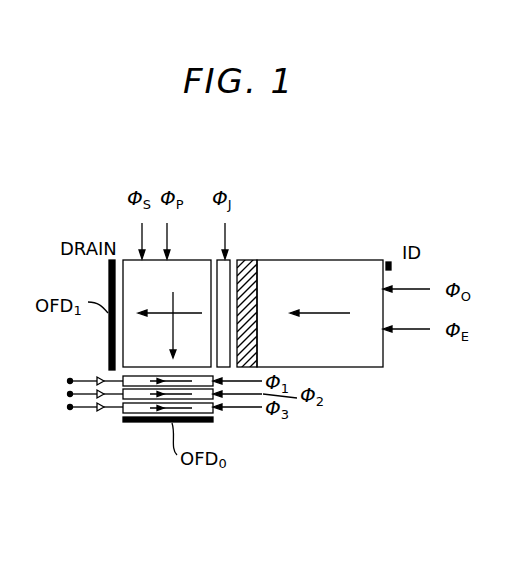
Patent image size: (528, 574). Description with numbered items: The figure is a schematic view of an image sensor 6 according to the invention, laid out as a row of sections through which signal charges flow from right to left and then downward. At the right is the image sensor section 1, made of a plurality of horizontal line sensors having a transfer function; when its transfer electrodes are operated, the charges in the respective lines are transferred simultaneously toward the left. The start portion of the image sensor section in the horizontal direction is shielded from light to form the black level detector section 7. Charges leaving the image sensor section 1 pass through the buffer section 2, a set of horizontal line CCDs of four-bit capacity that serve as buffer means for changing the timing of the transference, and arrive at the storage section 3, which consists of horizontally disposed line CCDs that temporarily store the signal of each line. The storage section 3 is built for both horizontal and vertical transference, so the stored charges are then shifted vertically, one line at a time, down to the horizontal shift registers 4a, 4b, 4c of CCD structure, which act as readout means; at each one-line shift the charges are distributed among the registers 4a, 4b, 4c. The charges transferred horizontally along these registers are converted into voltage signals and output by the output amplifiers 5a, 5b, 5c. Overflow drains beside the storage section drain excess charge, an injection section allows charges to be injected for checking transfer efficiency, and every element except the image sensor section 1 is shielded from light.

The image sensor section 1 is at (335, 266).
The buffer section 2 is at (230, 266).
The storage section 3 is at (181, 266).
The horizontal shift register 4a is at (122, 385).
The horizontal shift register 4b is at (122, 398).
The horizontal shift register 4c is at (122, 411).
The output amplifier 5a is at (96, 379).
The output amplifier 5b is at (96, 394).
The output amplifier 5c is at (96, 408).
The image sensor 6 is at (261, 208).
The black level detector section 7 is at (252, 266).